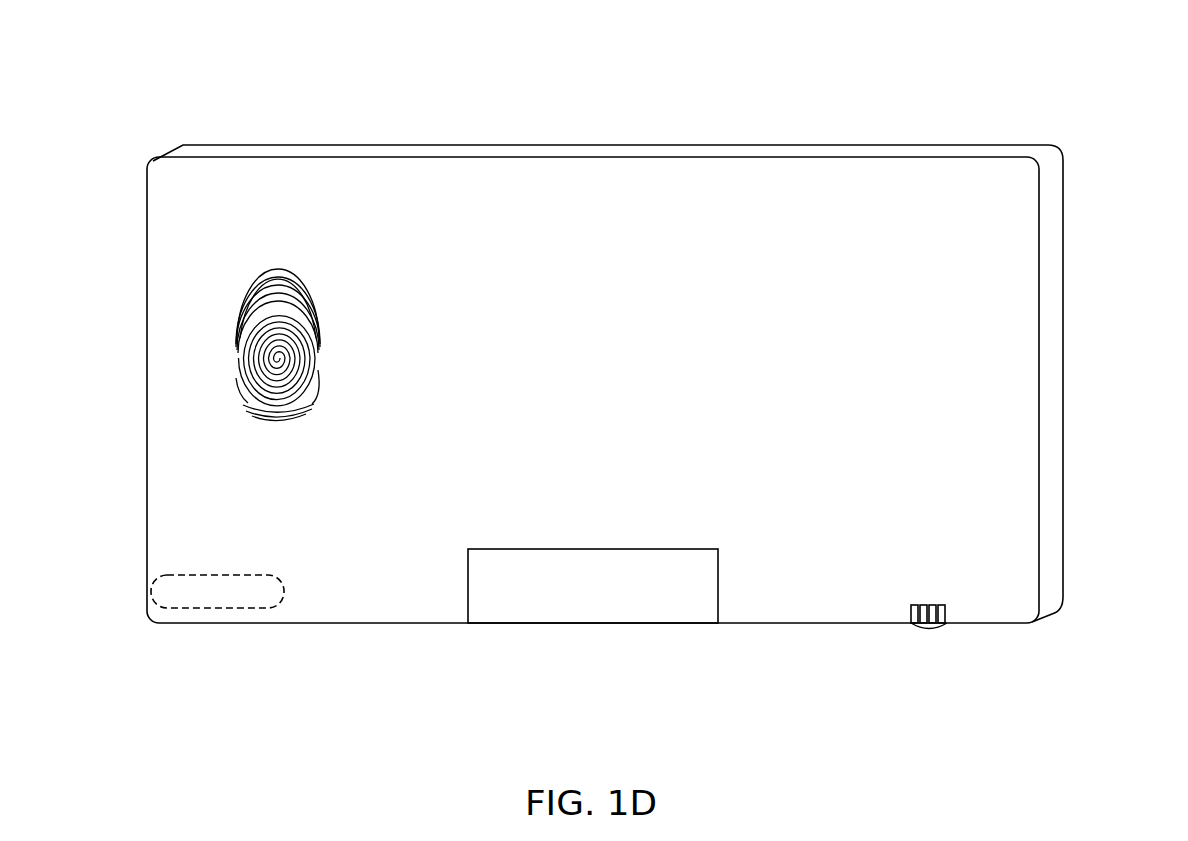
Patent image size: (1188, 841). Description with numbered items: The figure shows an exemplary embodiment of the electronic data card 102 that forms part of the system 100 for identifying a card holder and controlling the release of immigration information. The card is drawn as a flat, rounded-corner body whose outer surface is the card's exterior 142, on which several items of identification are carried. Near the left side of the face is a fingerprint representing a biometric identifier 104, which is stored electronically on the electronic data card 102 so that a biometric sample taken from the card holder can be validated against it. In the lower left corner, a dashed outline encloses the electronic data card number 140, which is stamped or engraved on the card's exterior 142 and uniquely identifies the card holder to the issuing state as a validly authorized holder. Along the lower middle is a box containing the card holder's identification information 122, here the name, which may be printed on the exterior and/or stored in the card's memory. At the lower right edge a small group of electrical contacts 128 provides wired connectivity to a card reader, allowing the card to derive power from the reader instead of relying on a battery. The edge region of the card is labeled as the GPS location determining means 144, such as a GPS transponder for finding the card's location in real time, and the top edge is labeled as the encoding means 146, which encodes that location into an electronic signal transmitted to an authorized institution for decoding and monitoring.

The system 100 is at (243, 97).
The electronic data card 102 is at (1093, 501).
The biometric identifier 104 is at (235, 342).
The card holder's identification information 122 is at (699, 617).
The electrical contacts 128 is at (929, 629).
The electronic data card number 140 is at (187, 608).
The card's exterior 142 is at (918, 186).
The GPS location determining means 144 is at (1063, 263).
The encoding means 146 is at (830, 145).